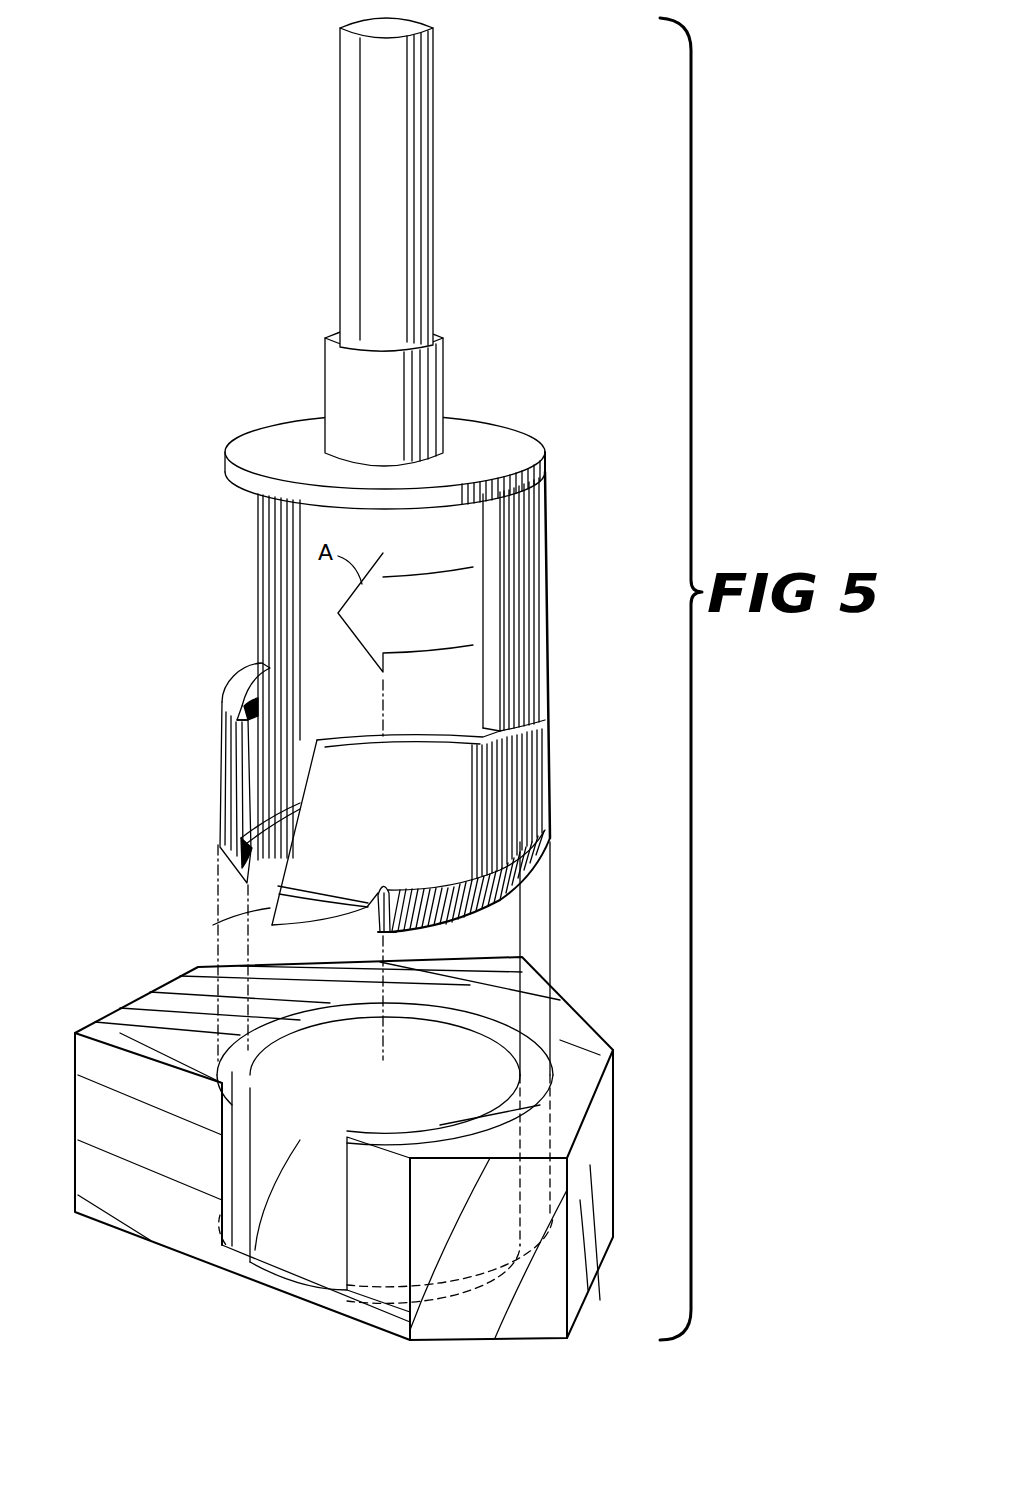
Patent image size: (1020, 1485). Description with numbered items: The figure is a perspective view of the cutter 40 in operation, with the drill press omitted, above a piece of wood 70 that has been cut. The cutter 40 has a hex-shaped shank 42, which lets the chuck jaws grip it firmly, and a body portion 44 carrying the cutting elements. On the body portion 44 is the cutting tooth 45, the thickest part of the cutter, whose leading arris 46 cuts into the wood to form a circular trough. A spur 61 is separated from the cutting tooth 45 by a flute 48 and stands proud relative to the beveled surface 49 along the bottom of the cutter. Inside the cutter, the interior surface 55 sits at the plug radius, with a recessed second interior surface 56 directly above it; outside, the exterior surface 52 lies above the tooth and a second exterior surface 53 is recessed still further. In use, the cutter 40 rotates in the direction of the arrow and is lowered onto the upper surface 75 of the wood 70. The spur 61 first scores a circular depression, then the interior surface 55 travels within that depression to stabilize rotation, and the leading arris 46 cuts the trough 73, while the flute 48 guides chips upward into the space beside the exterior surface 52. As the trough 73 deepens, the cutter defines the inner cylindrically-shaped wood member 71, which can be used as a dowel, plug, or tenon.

The cutter 40 is at (241, 106).
The shank 42 is at (343, 193).
The body portion 44 is at (546, 460).
The cutting tooth 45 is at (281, 932).
The leading arris 46 is at (235, 921).
The flute 48 is at (398, 888).
The beveled surface 49 is at (523, 879).
The exterior surface 52 is at (551, 783).
The second exterior surface 53 is at (549, 586).
The interior surface 55 is at (262, 834).
The second interior surface 56 is at (262, 772).
The spur 61 is at (401, 933).
The piece of wood 70 is at (599, 1158).
The inner cylindrically-shaped wood member 71 is at (424, 1084).
The trough 73 is at (551, 1050).
The upper surface 75 is at (541, 996).